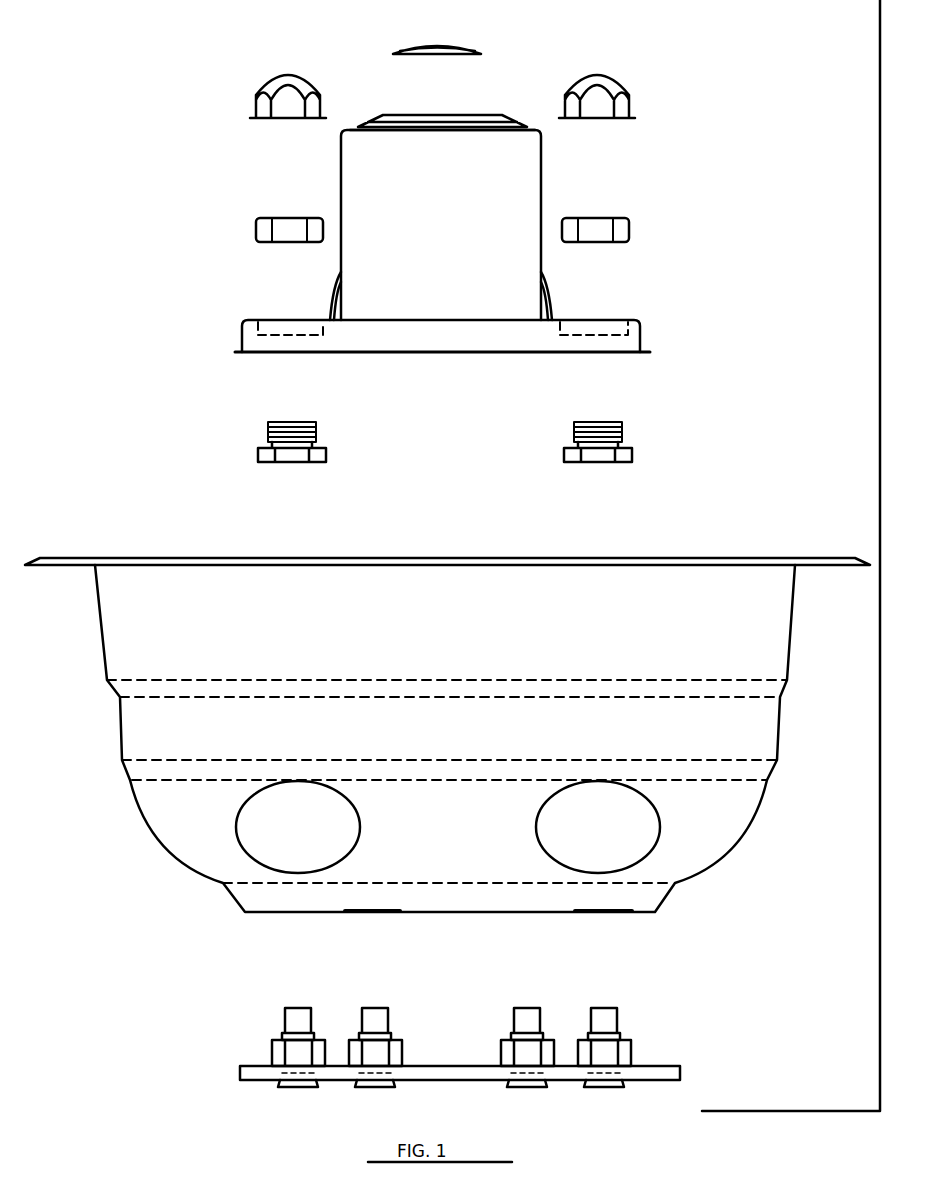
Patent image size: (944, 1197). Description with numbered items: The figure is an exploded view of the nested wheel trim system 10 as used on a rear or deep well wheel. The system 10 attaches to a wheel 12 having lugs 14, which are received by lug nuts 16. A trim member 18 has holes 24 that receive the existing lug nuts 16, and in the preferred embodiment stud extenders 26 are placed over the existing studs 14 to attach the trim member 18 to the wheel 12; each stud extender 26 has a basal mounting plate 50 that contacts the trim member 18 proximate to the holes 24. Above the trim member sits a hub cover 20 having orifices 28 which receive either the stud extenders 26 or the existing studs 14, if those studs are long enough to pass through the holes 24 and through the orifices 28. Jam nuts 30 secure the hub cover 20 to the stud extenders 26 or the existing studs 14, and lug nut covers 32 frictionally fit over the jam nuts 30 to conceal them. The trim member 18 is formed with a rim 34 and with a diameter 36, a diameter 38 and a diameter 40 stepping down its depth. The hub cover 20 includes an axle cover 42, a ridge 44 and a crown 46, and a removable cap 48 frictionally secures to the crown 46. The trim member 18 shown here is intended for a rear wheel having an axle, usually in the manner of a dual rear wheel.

The nested wheel trim system 10 is at (186, 133).
The wheel 12 is at (660, 1066).
The lugs 14 is at (288, 1013).
The lug nuts 16 is at (270, 1050).
The trim member 18 is at (665, 557).
The hub cover 20 is at (640, 320).
The holes 24 is at (380, 912).
The stud extenders 26 is at (612, 425).
The orifice 28 is at (275, 325).
The jam nuts 30 is at (283, 215).
The lug nut covers 32 is at (298, 62).
The rim 34 is at (500, 557).
The diameter 36 is at (790, 680).
The diameter 38 is at (780, 760).
The diameter 40 is at (673, 885).
The axle cover 42 is at (544, 185).
The ridge 44 is at (648, 345).
The crown 46 is at (499, 114).
The removable cap 48 is at (456, 47).
The basal mounting plate 50 is at (630, 452).